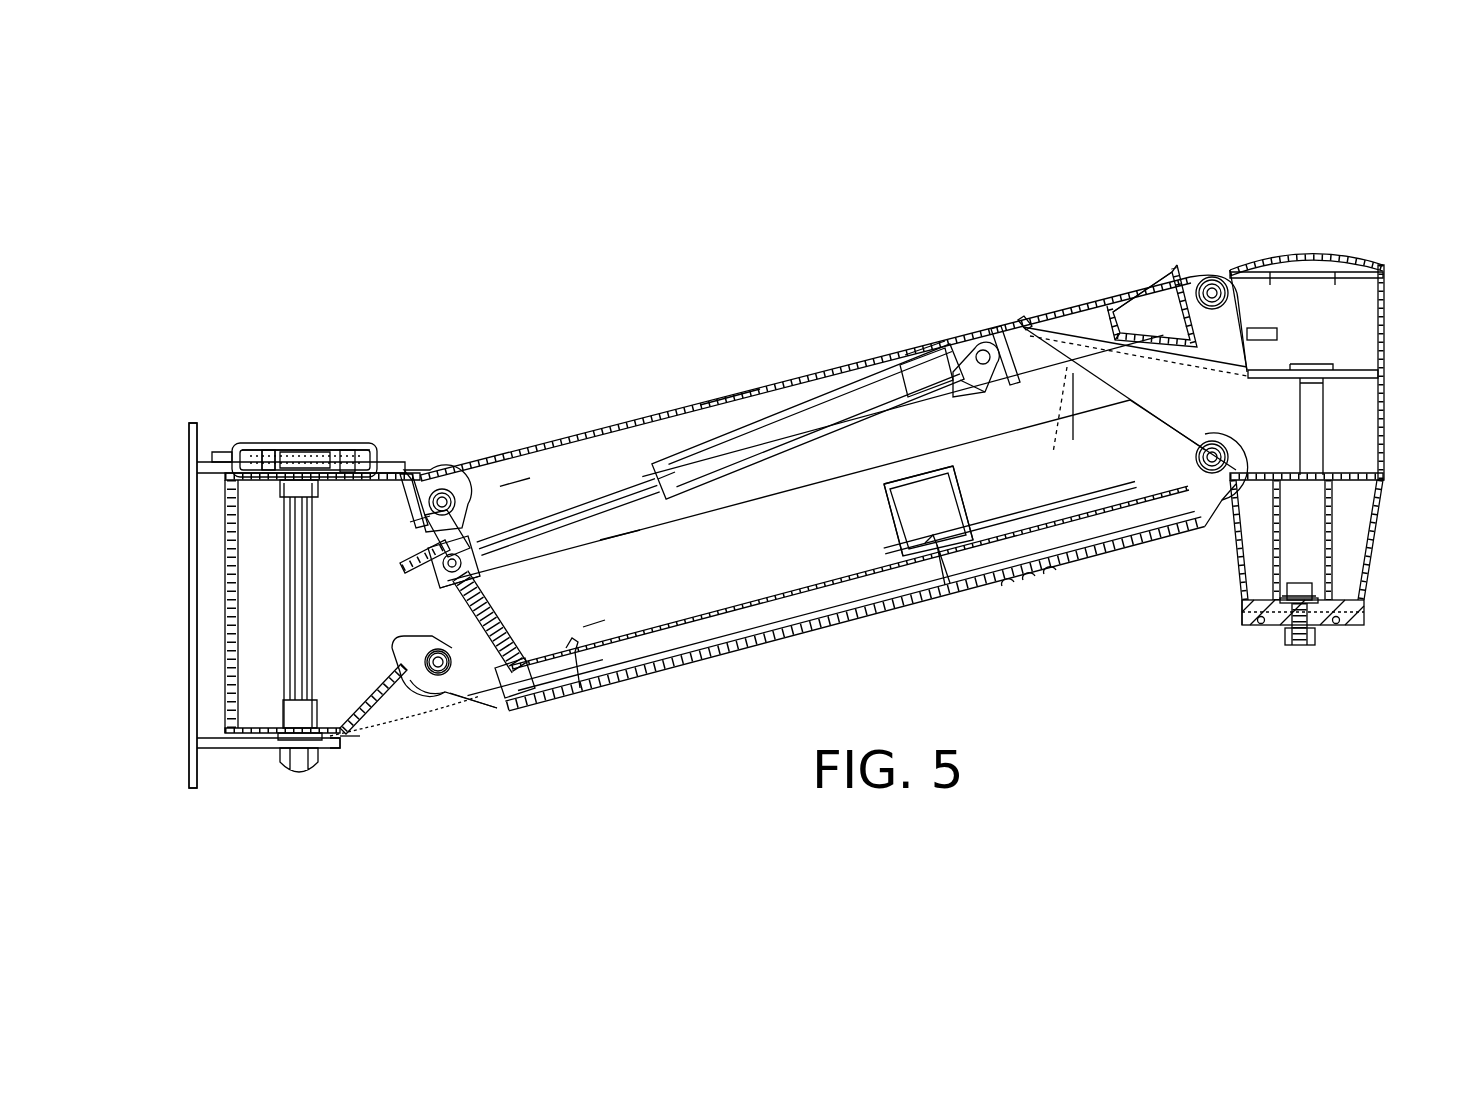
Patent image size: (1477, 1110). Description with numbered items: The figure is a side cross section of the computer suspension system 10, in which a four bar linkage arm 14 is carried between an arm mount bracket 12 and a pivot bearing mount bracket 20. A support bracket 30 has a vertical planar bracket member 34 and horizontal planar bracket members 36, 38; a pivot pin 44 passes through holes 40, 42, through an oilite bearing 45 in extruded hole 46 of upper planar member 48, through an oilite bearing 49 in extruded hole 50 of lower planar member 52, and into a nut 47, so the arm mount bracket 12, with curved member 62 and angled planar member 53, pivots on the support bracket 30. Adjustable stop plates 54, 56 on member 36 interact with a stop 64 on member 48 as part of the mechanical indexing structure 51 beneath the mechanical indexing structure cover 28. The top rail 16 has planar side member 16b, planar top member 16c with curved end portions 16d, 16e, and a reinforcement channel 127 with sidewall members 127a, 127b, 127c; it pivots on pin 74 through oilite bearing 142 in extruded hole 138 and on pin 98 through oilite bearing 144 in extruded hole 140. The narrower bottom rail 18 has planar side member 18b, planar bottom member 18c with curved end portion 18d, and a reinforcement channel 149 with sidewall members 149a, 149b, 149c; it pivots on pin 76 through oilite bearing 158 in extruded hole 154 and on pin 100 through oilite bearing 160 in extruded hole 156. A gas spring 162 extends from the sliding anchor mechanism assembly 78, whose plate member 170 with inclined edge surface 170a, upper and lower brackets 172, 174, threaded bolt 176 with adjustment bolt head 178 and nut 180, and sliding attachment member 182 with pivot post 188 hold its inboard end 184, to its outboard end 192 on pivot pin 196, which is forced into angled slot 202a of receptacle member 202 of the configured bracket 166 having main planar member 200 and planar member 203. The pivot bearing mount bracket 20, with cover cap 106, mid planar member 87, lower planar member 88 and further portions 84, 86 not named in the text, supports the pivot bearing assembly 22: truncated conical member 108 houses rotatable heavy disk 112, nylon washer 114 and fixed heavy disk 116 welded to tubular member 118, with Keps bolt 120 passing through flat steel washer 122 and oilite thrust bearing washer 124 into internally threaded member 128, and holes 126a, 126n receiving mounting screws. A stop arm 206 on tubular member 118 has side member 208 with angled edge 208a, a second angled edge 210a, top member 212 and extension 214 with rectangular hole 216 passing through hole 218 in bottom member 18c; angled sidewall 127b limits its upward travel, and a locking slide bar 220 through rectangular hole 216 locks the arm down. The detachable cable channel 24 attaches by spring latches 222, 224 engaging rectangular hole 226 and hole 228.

The computer suspension system 10 is at (340, 186).
The arm mount bracket 12 is at (292, 405).
The four bar linkage arm 14 is at (652, 362).
The top rail member 16 is at (572, 452).
The planar side member 16b is at (544, 489).
The planar top member 16c is at (750, 392).
The curved end portion 16d is at (421, 487).
The curved end portion 16e is at (1222, 268).
The bottom rail member 18 is at (805, 570).
The planar side member 18b is at (644, 549).
The planar bottom member 18c is at (718, 608).
The curved end portion 18d is at (418, 682).
The pivot bearing mount bracket 20 is at (1398, 248).
The pivot bearing assembly 22 is at (1385, 498).
The detachable cable channel 24 is at (700, 657).
The mechanical indexing structure cover 28 is at (300, 440).
The support bracket 30 is at (188, 392).
The vertically oriented planar bracket member 34 is at (192, 436).
The horizontally oriented planar bracket member 36 is at (210, 468).
The horizontally oriented planar bracket member 38 is at (205, 742).
The hole 40 is at (228, 482).
The hole 42 is at (317, 767).
The pivot pin 44 is at (313, 532).
The oilite bearing 45 is at (295, 503).
The extruded hole 46 is at (320, 493).
The nut 47 is at (295, 765).
The upper planar member 48 is at (392, 473).
The oilite bearing 49 is at (290, 707).
The extruded hole 50 is at (285, 737).
The mechanical indexing structure 51 is at (330, 400).
The lower planar member 52 is at (330, 730).
The angled planar member 53 is at (355, 730).
The adjustable stop plate 54 is at (268, 452).
The adjustable stop plate 56 is at (325, 455).
The curved member 62 is at (228, 590).
The stop 64 is at (355, 452).
The pin 74 is at (450, 482).
The pin 76 is at (440, 690).
The sliding anchor mechanism assembly 78 is at (492, 500).
The head rear wall 84 is at (1385, 353).
The head top plate 86 is at (1360, 272).
The mid planar member 87 is at (1358, 378).
The lower planar member 88 is at (1370, 478).
The pin 98 is at (1210, 287).
The pin 100 is at (1210, 450).
The cover cap 106 is at (1305, 255).
The truncated conical member 108 is at (1372, 512).
The rotatable heavy disk member 112 is at (1245, 618).
The nylon washer 114 is at (1360, 612).
The positionally fixed heavy disk member 116 is at (1240, 602).
The tubular member 118 is at (1272, 555).
The Keps bolt 120 is at (1300, 583).
The flat steel washer 122 is at (1316, 600).
The oilite thrust bearing washer 124 is at (1330, 594).
The hole 126a is at (1262, 626).
The hole 126n is at (1338, 624).
The reinforcement channel 127 is at (1062, 283).
The planar sidewall member 127a is at (1160, 270).
The planar sidewall member 127b is at (1160, 300).
The planar sidewall member 127c is at (1107, 282).
The internally threaded member 128 is at (1310, 643).
The extruded hole 138 is at (456, 494).
The extruded hole 140 is at (1208, 286).
The oilite bearing 142 is at (448, 498).
The oilite bearing 144 is at (1212, 282).
The reinforcement channel 149 is at (975, 492).
The planar sidewall member 149a is at (973, 518).
The planar sidewall member 149b is at (935, 470).
The planar sidewall member 149c is at (887, 525).
The extruded hole 154 is at (440, 692).
The extruded hole 156 is at (1197, 464).
The oilite bearing 158 is at (441, 655).
The oilite bearing 160 is at (1218, 453).
The gas spring 162 is at (742, 443).
The configured bracket 166 is at (932, 300).
The plate member 170 is at (397, 574).
The inclined edge surface 170a is at (407, 510).
The upper bracket 172 is at (400, 557).
The lower bracket 174 is at (455, 697).
The threaded bolt 176 is at (490, 605).
The adjustment bolt head 178 is at (507, 690).
The nut 180 is at (450, 525).
The sliding attachment member 182 is at (450, 583).
The inboard end 184 is at (458, 565).
The pivot post 188 is at (448, 577).
The outboard end 192 is at (975, 352).
The pivot pin 196 is at (982, 348).
The central main planar member 200 is at (1005, 382).
The planar receptacle member 202 is at (985, 380).
The angled slot 202a is at (925, 370).
The planar member 203 is at (866, 375).
The stop arm 206 is at (1210, 450).
The side member 208 is at (1135, 388).
The angled edge 208a is at (1073, 440).
The angled edge 210a is at (1050, 460).
The top member 212 is at (1207, 355).
The extension 214 is at (1022, 324).
The rectangular hole 216 is at (1035, 337).
The hole 218 is at (1008, 587).
The locking slide bar 220 is at (1085, 535).
The spring latch 222 is at (575, 628).
The spring latch 224 is at (927, 537).
The rectangular hole 226 is at (527, 672).
The hole 228 is at (932, 560).